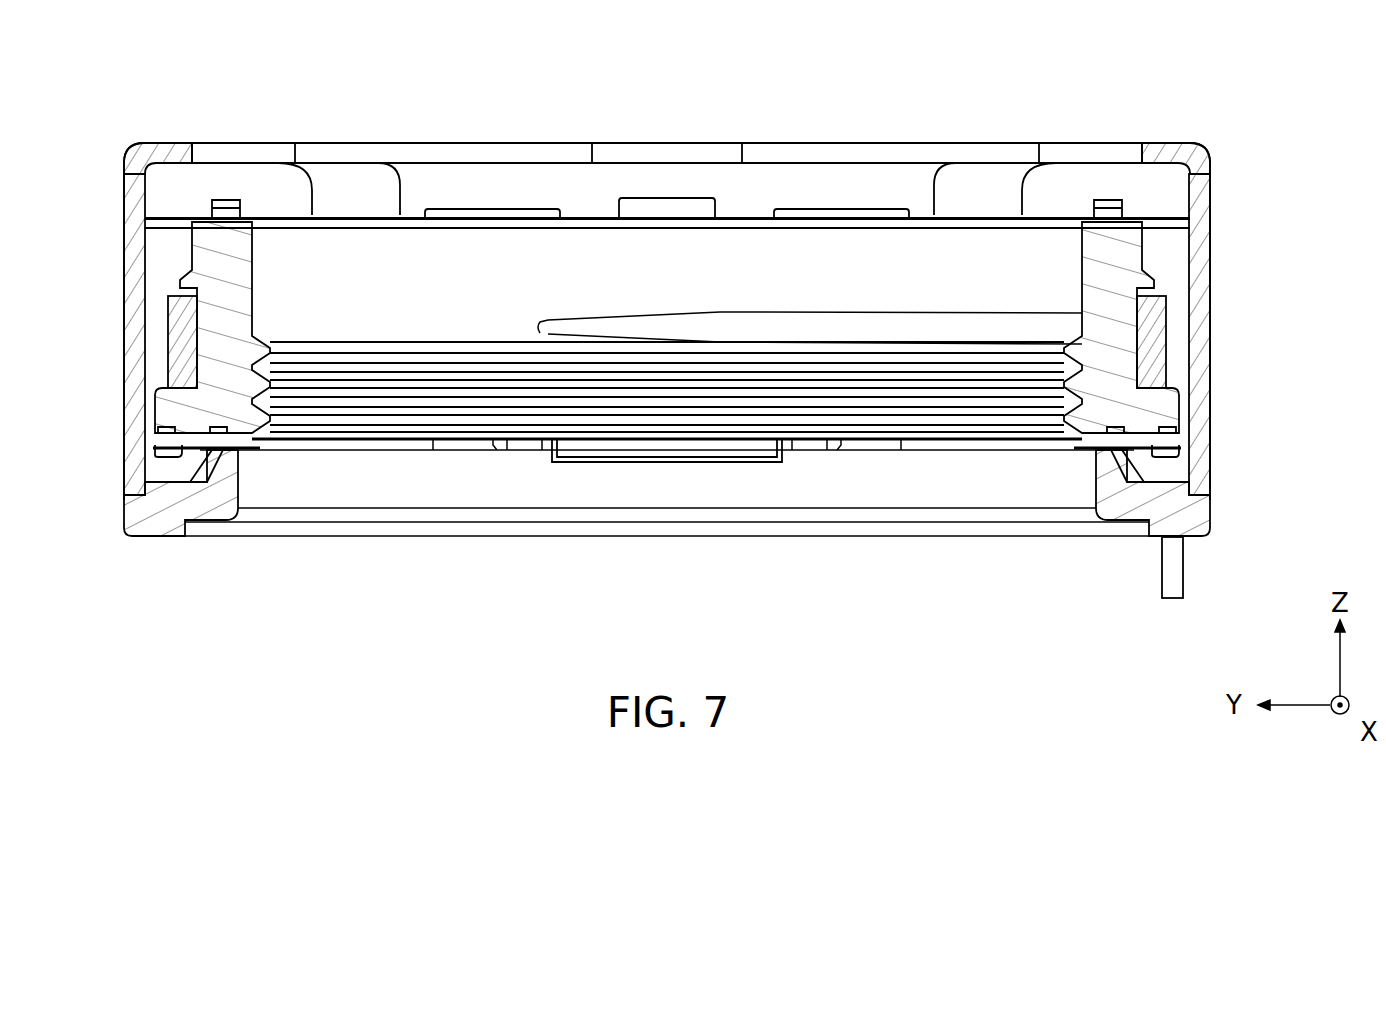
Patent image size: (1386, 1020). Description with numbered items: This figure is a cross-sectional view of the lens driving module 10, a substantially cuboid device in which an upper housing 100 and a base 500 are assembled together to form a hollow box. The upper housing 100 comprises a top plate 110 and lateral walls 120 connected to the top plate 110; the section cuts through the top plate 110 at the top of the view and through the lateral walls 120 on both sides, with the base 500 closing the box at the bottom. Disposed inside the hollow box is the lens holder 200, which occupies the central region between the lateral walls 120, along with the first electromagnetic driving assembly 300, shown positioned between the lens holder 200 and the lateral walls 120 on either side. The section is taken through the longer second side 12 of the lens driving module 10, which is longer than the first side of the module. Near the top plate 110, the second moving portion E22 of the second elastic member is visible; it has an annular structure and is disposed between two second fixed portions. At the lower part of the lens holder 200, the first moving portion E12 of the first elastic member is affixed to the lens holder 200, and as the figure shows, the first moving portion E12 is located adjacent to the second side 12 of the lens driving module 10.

The lens driving module 10 is at (1313, 35).
The second side 12 is at (667, 330).
The upper housing 100 is at (138, 147).
The top plate 110 is at (667, 120).
The lateral walls 120 is at (666, 334).
The lens holder 200 is at (666, 330).
The first electromagnetic driving assembly 300 is at (666, 342).
The base 500 is at (666, 493).
The first moving portion E12 is at (172, 428).
The second moving portion E22 is at (667, 141).